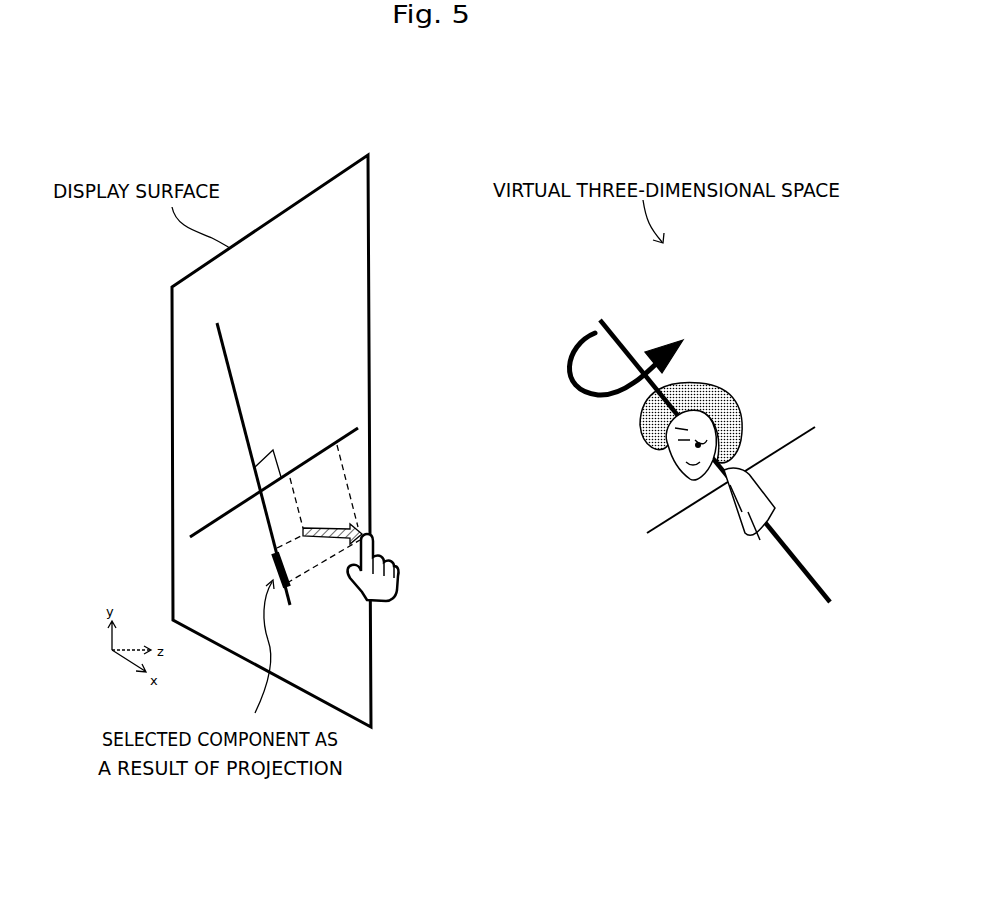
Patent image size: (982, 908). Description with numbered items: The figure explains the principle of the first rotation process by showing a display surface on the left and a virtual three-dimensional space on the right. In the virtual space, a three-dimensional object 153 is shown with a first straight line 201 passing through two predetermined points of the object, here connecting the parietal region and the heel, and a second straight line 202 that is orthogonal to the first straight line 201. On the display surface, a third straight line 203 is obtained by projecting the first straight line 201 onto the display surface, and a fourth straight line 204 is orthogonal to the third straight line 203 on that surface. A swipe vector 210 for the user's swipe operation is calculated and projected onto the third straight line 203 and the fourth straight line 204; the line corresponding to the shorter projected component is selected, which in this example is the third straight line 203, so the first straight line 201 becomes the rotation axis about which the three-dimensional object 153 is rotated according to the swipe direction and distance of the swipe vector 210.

The three-dimensional object 153 is at (700, 383).
The first straight line 201 is at (808, 572).
The second straight line 202 is at (795, 435).
The third straight line 203 is at (230, 383).
The fourth straight line 204 is at (220, 518).
The swipe vector 210 is at (333, 530).